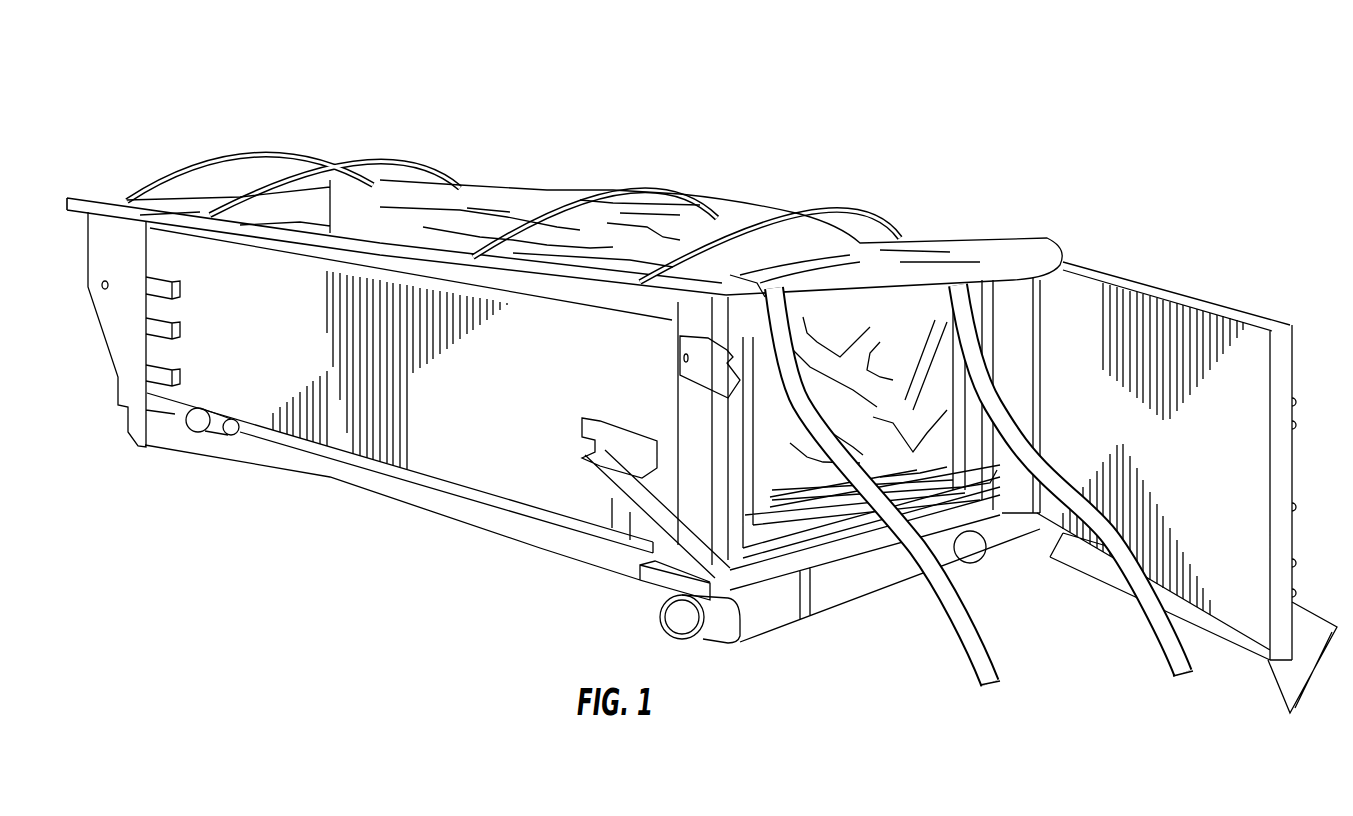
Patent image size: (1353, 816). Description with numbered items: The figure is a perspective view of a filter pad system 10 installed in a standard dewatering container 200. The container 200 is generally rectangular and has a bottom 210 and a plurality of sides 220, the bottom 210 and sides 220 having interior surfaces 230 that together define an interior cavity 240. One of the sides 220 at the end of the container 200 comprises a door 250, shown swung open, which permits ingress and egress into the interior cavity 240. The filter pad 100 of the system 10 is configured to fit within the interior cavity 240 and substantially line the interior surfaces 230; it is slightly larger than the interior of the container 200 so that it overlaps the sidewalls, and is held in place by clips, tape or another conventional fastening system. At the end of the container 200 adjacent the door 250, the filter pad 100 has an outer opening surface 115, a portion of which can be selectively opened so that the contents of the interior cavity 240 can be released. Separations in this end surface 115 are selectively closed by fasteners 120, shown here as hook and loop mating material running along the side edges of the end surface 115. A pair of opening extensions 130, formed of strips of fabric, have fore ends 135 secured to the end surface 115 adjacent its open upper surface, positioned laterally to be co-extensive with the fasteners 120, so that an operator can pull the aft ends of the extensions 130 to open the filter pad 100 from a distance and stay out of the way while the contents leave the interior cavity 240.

The filter pad system 10 is at (702, 385).
The filter pad 100 is at (594, 325).
The opening surface 115 is at (853, 327).
The fasteners 120 is at (760, 467).
The opening extension 130 is at (976, 427).
The fore ends 135 is at (770, 288).
The dewatering container 200 is at (702, 422).
The bottom 210 is at (852, 512).
The sides 220 is at (450, 430).
The interior surfaces 230 is at (992, 303).
The interior cavity 240 is at (368, 216).
The door 250 is at (1241, 648).